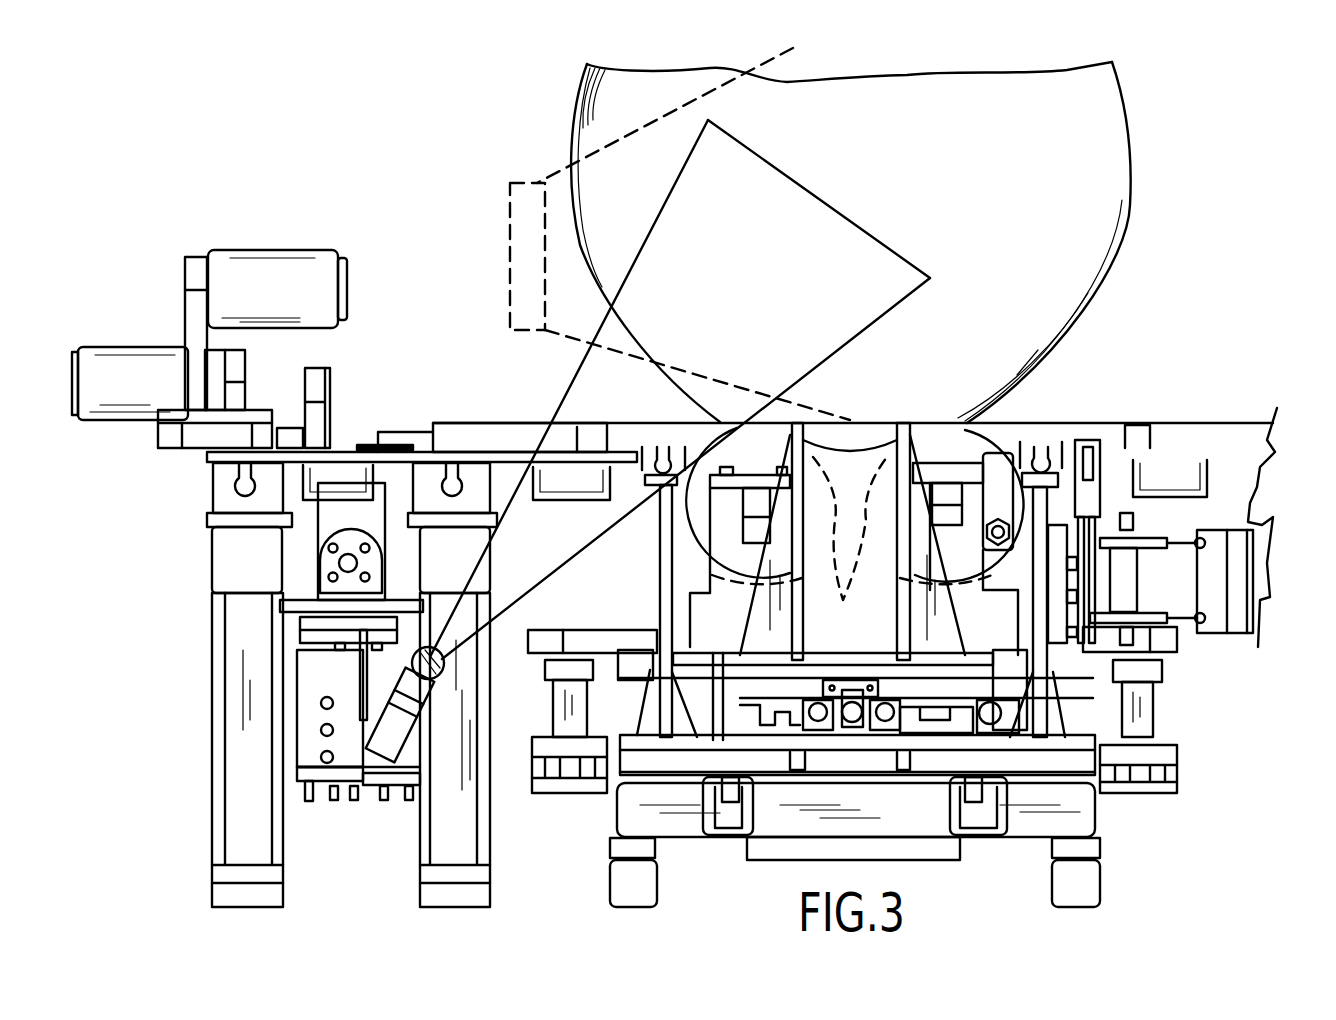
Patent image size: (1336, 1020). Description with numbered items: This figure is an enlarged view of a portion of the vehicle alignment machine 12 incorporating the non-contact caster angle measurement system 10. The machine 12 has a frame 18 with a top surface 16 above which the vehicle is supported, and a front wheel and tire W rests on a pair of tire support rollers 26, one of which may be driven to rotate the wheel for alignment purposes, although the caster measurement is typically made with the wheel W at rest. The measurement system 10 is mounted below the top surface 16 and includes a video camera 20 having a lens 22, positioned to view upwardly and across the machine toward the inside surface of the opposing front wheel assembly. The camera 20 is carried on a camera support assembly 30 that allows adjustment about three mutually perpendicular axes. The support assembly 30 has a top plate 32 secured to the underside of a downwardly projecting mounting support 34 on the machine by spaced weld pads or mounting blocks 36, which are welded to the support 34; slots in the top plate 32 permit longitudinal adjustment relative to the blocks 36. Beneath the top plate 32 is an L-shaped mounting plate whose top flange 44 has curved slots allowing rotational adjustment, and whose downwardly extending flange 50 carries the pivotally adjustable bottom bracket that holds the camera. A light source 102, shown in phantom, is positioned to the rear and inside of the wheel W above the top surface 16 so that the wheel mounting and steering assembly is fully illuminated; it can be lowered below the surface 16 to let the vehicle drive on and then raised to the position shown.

The non-contact caster angle measurement system 10 is at (428, 720).
The vehicle alignment machine 12 is at (486, 418).
The top surface 16 is at (1147, 427).
The frame 18 is at (1243, 445).
The video camera 20 is at (350, 645).
The lens 22 is at (430, 688).
The tire support rollers 26 is at (850, 548).
The camera support assembly 30 is at (293, 719).
The top plate 32 is at (320, 637).
The mounting support 34 is at (300, 597).
The mounting blocks 36 is at (310, 620).
The top flange 44 is at (330, 655).
The downwardly extending flange 50 is at (305, 740).
The light source 102 is at (510, 215).
The wheel W is at (1124, 257).